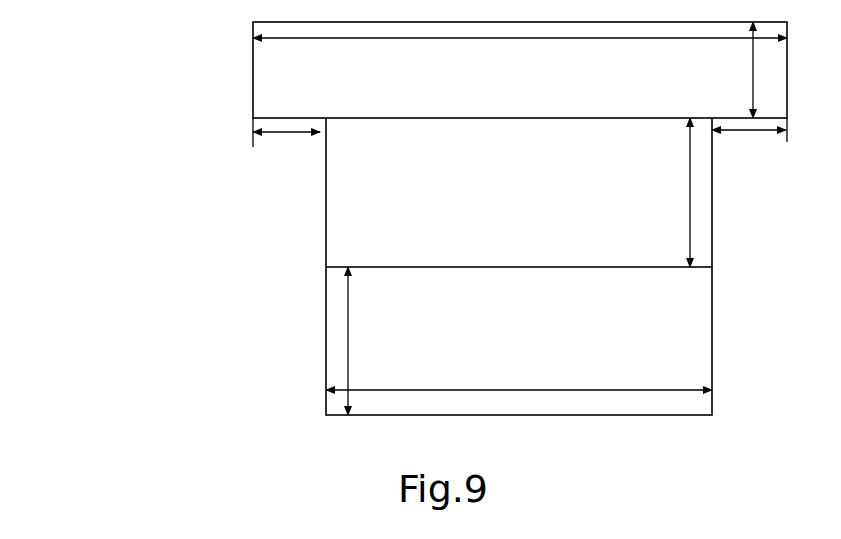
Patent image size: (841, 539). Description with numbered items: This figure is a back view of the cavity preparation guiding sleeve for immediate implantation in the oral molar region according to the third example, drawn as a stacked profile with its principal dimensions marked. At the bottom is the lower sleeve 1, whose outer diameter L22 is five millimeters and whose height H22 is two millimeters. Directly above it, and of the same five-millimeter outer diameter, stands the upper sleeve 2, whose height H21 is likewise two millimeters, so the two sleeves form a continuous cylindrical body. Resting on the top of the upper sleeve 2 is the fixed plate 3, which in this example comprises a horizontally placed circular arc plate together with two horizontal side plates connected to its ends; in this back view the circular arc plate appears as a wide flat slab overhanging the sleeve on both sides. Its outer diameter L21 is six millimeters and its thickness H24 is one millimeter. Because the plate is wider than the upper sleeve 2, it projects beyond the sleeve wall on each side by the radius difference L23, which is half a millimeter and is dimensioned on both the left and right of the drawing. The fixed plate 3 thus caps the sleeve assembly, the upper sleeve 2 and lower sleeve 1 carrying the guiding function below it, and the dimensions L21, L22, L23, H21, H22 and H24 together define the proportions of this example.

The lower sleeve 1 is at (326, 317).
The upper sleeve 2 is at (326, 202).
The fixed plate 3 is at (253, 72).
The outer diameter of the circular arc plate L21 is at (520, 54).
The outer diameter of the lower sleeve L22 is at (519, 375).
The radius difference between the circular arc plate and the upper sleeve L23 is at (519, 153).
The height of the upper sleeve H21 is at (664, 192).
The height of the lower sleeve H22 is at (381, 341).
The thickness of the circular arc plate H24 is at (723, 70).